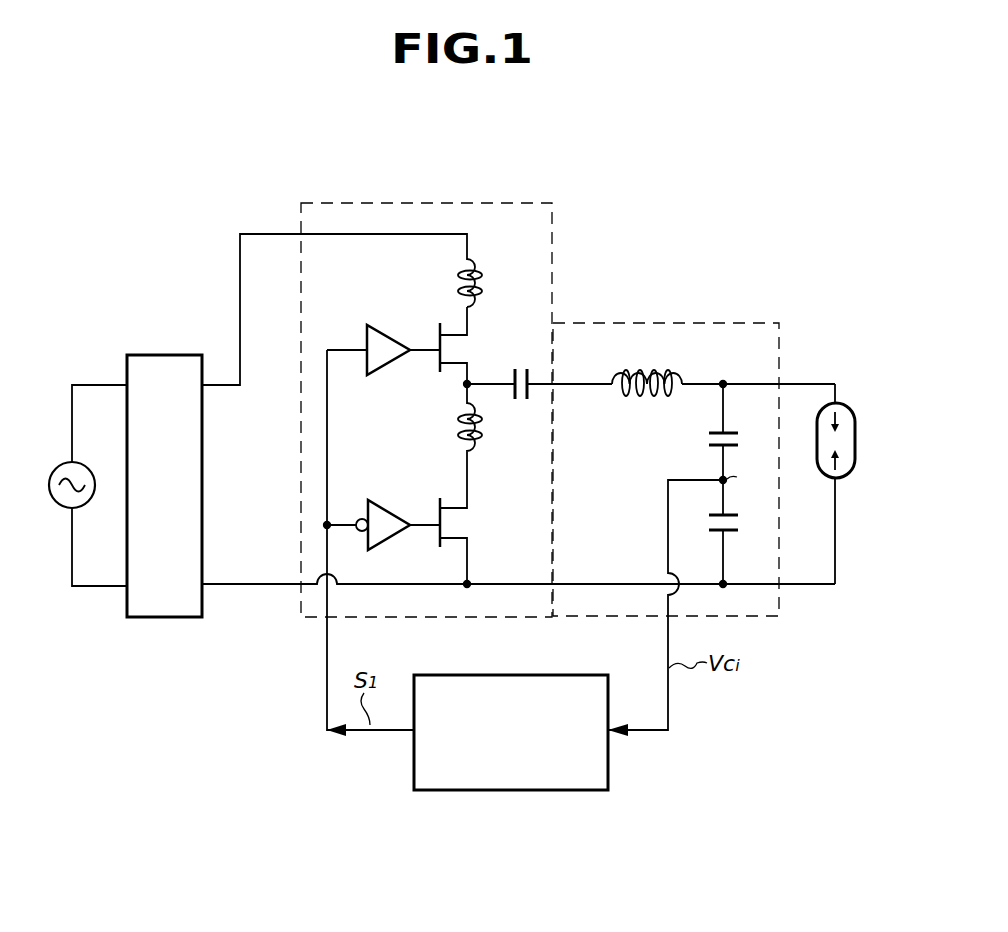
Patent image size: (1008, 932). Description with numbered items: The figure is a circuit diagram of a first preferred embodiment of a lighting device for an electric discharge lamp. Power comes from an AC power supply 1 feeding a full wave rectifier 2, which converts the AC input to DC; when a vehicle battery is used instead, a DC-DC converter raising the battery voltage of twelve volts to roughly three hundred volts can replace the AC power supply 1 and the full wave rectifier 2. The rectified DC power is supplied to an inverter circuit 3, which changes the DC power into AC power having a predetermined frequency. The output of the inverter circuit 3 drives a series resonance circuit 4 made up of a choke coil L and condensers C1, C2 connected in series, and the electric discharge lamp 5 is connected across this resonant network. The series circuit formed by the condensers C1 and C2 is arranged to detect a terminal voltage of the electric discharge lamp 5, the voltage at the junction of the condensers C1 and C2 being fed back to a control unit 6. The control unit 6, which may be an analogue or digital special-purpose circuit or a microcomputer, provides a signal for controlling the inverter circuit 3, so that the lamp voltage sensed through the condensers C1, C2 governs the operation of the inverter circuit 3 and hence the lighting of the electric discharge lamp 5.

The AC power supply 1 is at (88, 462).
The full wave rectifier 2 is at (170, 354).
The inverter circuit 3 is at (412, 203).
The series resonance circuit 4 is at (694, 443).
The electric discharge lamp 5 is at (855, 425).
The control unit 6 is at (570, 675).
The choke coil L is at (639, 401).
The condenser C1 is at (735, 444).
The condenser C2 is at (738, 521).